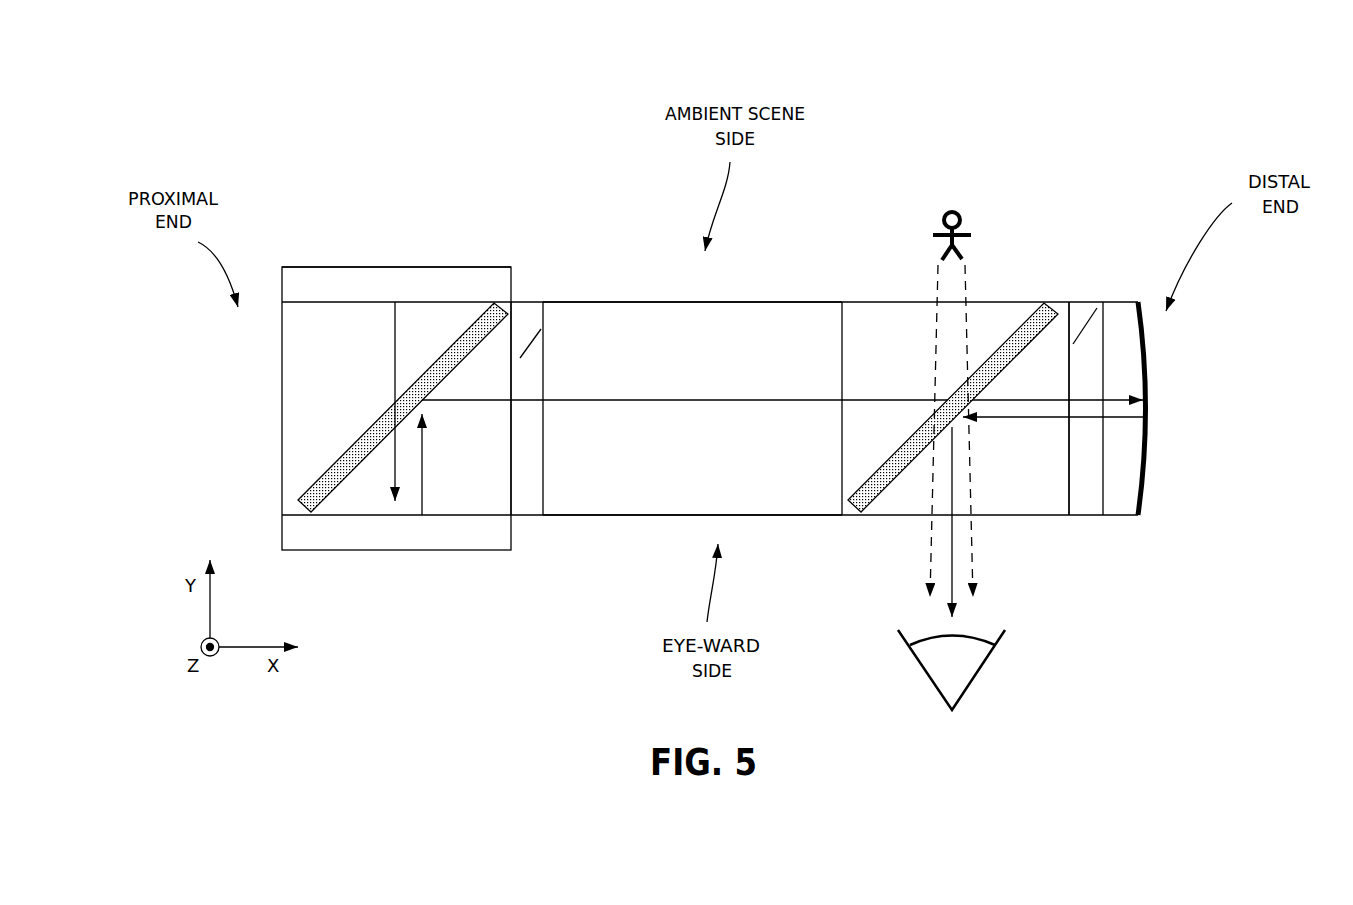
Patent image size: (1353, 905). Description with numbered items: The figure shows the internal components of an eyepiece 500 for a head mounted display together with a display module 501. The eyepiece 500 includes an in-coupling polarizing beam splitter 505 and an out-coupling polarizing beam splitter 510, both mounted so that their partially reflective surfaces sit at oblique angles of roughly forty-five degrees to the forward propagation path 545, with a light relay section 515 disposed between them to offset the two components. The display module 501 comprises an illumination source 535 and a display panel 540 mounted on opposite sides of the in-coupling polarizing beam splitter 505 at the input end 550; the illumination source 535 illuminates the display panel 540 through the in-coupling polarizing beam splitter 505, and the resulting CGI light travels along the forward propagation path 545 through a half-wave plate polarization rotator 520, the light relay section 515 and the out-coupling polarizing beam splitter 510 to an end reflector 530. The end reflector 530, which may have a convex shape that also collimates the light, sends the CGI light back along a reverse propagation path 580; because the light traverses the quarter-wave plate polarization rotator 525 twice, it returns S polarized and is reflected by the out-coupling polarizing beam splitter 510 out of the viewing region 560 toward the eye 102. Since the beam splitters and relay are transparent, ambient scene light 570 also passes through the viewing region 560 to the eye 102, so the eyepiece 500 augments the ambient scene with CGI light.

The eyepiece 500 is at (934, 62).
The display module 501 is at (277, 139).
The in-coupling polarizing beam splitter 505 is at (323, 331).
The out-coupling polarizing beam splitter 510 is at (888, 332).
The light relay section 515 is at (593, 332).
The half-wave plate polarization rotator 520 is at (525, 302).
The quarter-wave plate polarization rotator 525 is at (1085, 302).
The end reflector 530 is at (1148, 452).
The illumination source 535 is at (409, 296).
The display panel 540 is at (409, 542).
The forward propagation path 545 is at (766, 401).
The input end 550 is at (521, 220).
The viewing region 560 is at (1058, 193).
The ambient scene light 570 is at (937, 291).
The reverse propagation path 580 is at (1043, 419).
The eye 102 is at (966, 671).